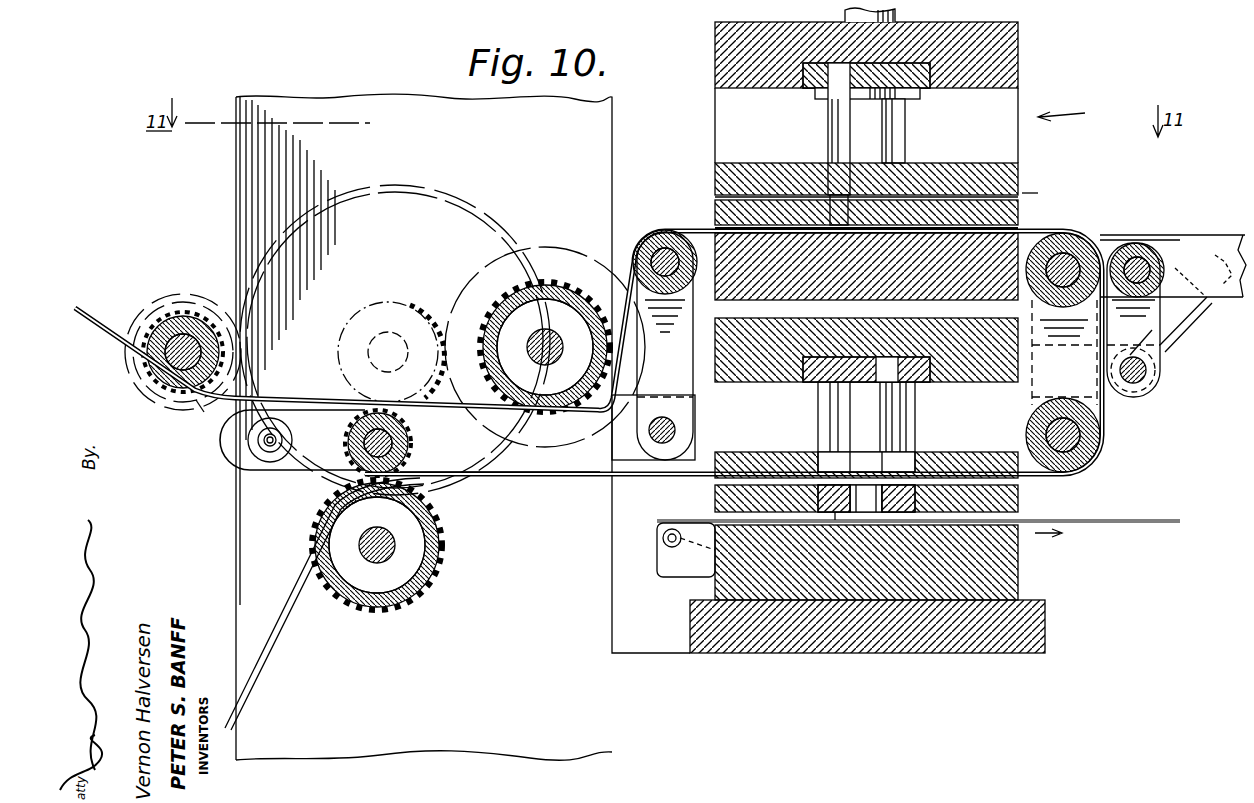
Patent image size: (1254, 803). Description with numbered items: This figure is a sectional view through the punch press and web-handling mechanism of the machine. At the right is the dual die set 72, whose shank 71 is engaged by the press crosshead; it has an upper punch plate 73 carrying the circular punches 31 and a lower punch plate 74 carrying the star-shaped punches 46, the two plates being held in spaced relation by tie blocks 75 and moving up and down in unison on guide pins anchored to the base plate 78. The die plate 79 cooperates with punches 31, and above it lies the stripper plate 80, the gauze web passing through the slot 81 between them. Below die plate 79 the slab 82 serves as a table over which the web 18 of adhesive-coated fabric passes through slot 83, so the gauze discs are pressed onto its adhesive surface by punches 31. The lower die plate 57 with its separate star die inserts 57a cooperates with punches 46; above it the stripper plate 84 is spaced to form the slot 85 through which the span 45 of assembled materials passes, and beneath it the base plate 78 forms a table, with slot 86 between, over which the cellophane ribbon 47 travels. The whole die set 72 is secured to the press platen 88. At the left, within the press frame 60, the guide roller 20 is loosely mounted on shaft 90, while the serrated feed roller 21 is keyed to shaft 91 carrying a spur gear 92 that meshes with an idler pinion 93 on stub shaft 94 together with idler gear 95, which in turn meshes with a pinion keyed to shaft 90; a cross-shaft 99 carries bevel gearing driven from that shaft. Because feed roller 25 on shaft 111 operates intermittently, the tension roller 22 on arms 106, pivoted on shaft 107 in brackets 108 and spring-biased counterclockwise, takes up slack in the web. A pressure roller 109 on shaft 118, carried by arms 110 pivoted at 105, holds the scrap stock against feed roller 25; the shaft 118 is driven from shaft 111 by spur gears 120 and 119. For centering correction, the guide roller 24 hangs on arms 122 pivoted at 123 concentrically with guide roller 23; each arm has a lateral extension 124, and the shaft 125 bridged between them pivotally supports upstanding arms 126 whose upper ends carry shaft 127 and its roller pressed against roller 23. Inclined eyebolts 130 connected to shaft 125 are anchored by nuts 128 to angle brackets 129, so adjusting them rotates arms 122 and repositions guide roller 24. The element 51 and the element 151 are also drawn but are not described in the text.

The web of adhesive-coated fabric 18 is at (92, 325).
The guide roller 20 is at (183, 312).
The serrated feed roller 21 is at (548, 282).
The tension roller 22 is at (638, 238).
The guide roller 23 is at (1065, 240).
The guide roller 24 is at (1104, 460).
The feed roller 25 is at (440, 566).
The circular punches 31 is at (828, 132).
The span of assembled materials 45 is at (562, 477).
The star-shaped punches 46 is at (916, 426).
The cellophane ribbon 47 is at (1094, 525).
The pin 51 is at (672, 560).
The die plate 57 is at (1018, 500).
The star die inserts 57a is at (936, 512).
The frame 60 is at (236, 172).
The shank 71 is at (896, 13).
The dual die set 72 is at (1067, 149).
The upper punch plate 73 is at (1018, 82).
The lower punch plate 74 is at (748, 384).
The tie blocks 75 is at (715, 131).
The base plate 78 is at (1018, 576).
The die plate 79 is at (1018, 216).
The stripper plate 80 is at (1018, 176).
The slot 81 is at (715, 198).
The slab 82 is at (838, 278).
The slot 83 is at (715, 228).
The stripper plate 84 is at (966, 456).
The slot 85 is at (716, 492).
The slot 86 is at (1030, 518).
The press platen 88 is at (1046, 640).
The shaft 90 is at (150, 322).
The shaft 91 is at (562, 348).
The spur gear 92 is at (468, 284).
The idler pinion 93 is at (418, 306).
The stub shaft 94 is at (372, 358).
The idler gear 95 is at (468, 206).
The cross-shaft 99 is at (1152, 268).
The pivot 105 is at (272, 455).
The arms 106 is at (680, 389).
The shaft 107 is at (676, 432).
The brackets 108 is at (634, 462).
The pressure roller 109 is at (404, 455).
The arms 110 is at (330, 461).
The shaft 111 is at (405, 575).
The shaft 118 is at (396, 440).
The spur gear 119 is at (312, 612).
The spur gear 120 is at (348, 440).
The arms 122 is at (1040, 385).
The pivot shaft 123 is at (1080, 265).
The lateral extension 124 is at (1144, 398).
The shaft 125 is at (1150, 378).
The upstanding arms 126 is at (1152, 336).
The shaft 127 is at (1142, 250).
The nuts 128 is at (1173, 254).
The angle brackets 129 is at (1186, 282).
The eyebolts 130 is at (1176, 328).
The spring 151 is at (1226, 296).